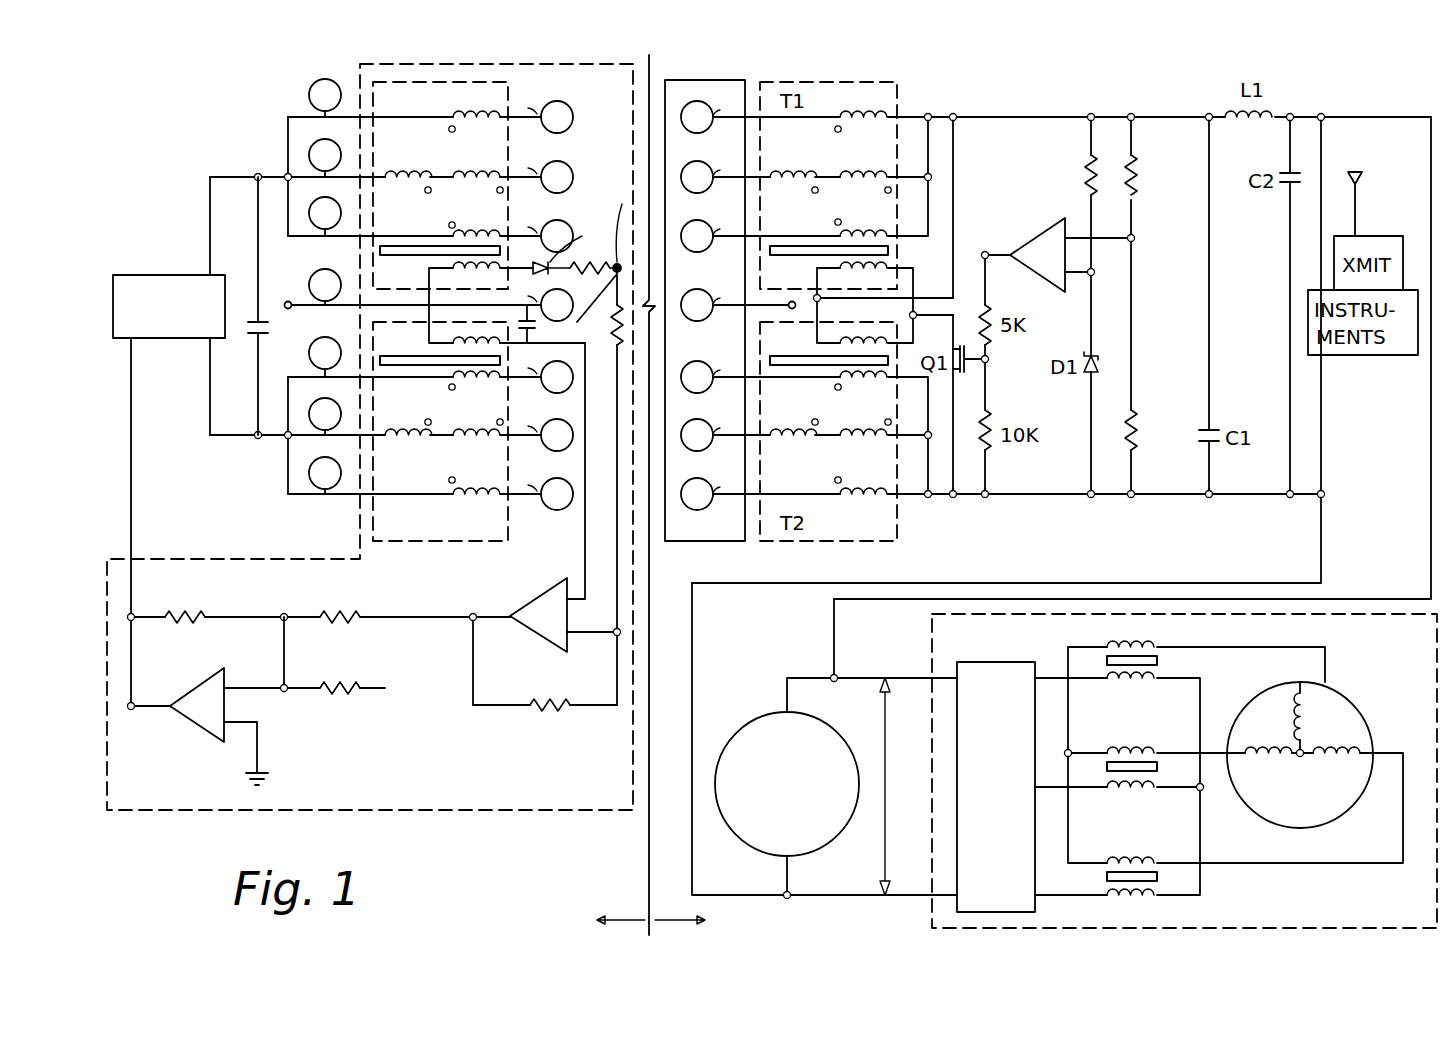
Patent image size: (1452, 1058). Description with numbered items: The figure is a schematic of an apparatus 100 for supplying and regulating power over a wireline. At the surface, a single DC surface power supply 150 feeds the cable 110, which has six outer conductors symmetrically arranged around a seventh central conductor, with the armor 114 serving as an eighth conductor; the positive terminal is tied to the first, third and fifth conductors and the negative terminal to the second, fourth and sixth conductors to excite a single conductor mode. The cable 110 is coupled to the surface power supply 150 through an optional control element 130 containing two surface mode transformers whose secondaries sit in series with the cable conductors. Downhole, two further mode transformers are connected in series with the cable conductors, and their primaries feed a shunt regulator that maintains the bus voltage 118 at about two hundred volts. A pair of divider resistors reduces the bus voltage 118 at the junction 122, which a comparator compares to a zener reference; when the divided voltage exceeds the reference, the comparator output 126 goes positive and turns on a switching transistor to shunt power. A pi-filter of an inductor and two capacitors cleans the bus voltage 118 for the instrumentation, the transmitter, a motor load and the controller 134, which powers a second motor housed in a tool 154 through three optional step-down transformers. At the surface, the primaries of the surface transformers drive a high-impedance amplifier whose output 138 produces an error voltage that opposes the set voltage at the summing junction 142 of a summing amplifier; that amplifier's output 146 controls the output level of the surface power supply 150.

The apparatus 100 is at (506, 867).
The cable 110 is at (721, 78).
The armor 114 is at (712, 541).
The bus voltage 118 is at (885, 863).
The junction of resistors R2 and R3 122 is at (1133, 240).
The output of the comparator U1 126 is at (985, 253).
The control element 130 is at (178, 810).
The controller 134 is at (975, 662).
The output of U2 138 is at (470, 614).
The summing junction 142 is at (284, 690).
The output of amplifier U3 146 is at (131, 708).
The surface power supply 150 is at (160, 274).
The tool 154 is at (932, 630).